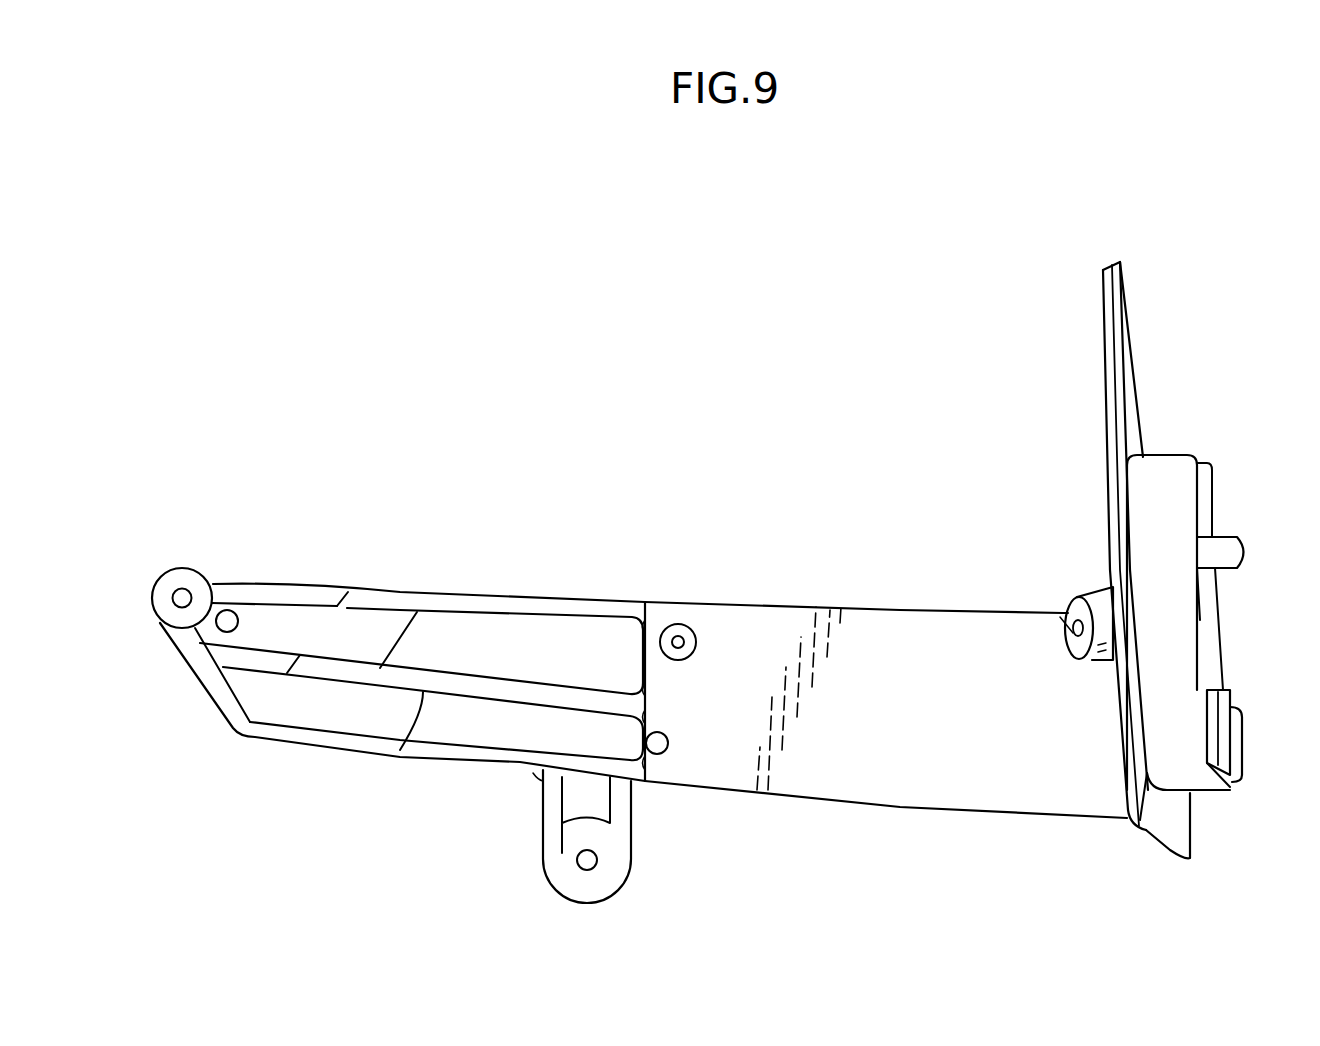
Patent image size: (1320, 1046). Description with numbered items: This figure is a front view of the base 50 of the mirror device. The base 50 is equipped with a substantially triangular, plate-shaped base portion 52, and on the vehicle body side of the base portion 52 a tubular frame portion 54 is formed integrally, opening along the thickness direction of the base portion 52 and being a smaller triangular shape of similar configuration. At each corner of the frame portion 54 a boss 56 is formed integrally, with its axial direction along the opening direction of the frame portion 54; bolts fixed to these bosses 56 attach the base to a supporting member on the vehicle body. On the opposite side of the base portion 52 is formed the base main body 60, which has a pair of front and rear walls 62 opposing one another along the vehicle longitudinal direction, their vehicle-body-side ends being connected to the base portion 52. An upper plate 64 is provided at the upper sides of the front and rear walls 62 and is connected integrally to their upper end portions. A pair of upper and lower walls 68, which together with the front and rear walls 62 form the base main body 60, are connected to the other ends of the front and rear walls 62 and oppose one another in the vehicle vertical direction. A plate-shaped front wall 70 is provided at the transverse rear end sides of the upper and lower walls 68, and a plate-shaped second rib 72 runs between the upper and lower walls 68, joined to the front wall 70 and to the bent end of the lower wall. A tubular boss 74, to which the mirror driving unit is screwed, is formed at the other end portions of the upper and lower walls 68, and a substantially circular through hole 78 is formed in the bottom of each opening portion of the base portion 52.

The base 50 is at (895, 328).
The base portion 52 is at (1125, 328).
The frame portion 54 is at (1166, 465).
The boss 56 is at (1207, 478).
The base main body 60 is at (822, 565).
The front and rear walls 62 is at (884, 637).
The upper plate 64 is at (970, 610).
The upper and lower walls 68 is at (542, 590).
The front wall 70 is at (523, 760).
The second rib 72 is at (392, 755).
The boss 74 is at (208, 578).
The through hole 78 is at (1060, 600).